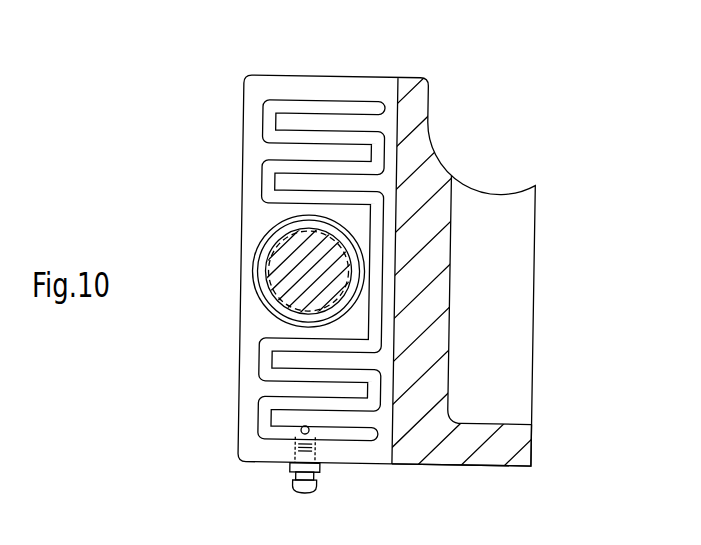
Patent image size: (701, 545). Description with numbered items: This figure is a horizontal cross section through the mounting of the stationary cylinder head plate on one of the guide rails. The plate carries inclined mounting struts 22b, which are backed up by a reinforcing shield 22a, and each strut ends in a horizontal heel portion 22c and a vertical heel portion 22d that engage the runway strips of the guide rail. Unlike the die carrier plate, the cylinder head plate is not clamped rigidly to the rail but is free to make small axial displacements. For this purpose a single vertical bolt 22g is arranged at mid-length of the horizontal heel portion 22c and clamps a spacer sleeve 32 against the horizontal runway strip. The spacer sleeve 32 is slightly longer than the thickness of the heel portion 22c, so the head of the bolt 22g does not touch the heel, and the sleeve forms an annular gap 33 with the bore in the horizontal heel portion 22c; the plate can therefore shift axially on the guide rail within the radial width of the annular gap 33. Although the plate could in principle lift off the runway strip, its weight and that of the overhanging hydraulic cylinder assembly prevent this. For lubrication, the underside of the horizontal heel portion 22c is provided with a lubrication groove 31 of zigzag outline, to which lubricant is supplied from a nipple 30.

The reinforcing shield 22a is at (476, 443).
The inclined mounting struts 22b is at (528, 313).
The horizontal heel portion 22c is at (323, 88).
The vertical heel portion 22d is at (437, 374).
The vertical bolt 22g is at (287, 265).
The nipple 30 is at (313, 478).
The lubrication groove 31 is at (262, 407).
The spacer sleeve 32 is at (260, 272).
The annular gap 33 is at (273, 230).